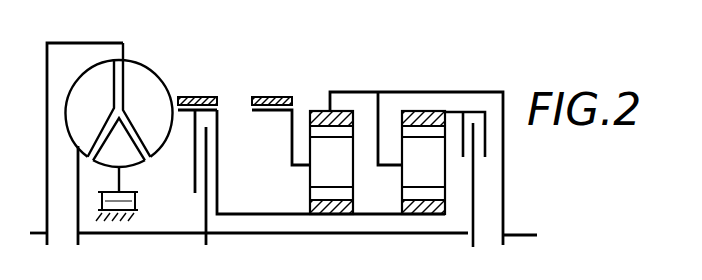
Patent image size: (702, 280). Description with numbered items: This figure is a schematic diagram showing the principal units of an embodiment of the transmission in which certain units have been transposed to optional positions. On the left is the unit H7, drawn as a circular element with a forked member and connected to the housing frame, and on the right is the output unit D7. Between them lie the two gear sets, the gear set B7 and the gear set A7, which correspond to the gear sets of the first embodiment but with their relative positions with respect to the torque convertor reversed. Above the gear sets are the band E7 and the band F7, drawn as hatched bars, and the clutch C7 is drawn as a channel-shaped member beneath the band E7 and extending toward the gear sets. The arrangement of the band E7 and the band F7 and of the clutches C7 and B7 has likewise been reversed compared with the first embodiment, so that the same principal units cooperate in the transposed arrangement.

The rotary switch / armature assembly H7 is at (177, 65).
The band E7 is at (203, 97).
The clutch C7 is at (228, 118).
The band F7 is at (288, 97).
The gear set B7 is at (348, 102).
The gear set A7 is at (422, 102).
The shaft D7 is at (475, 102).